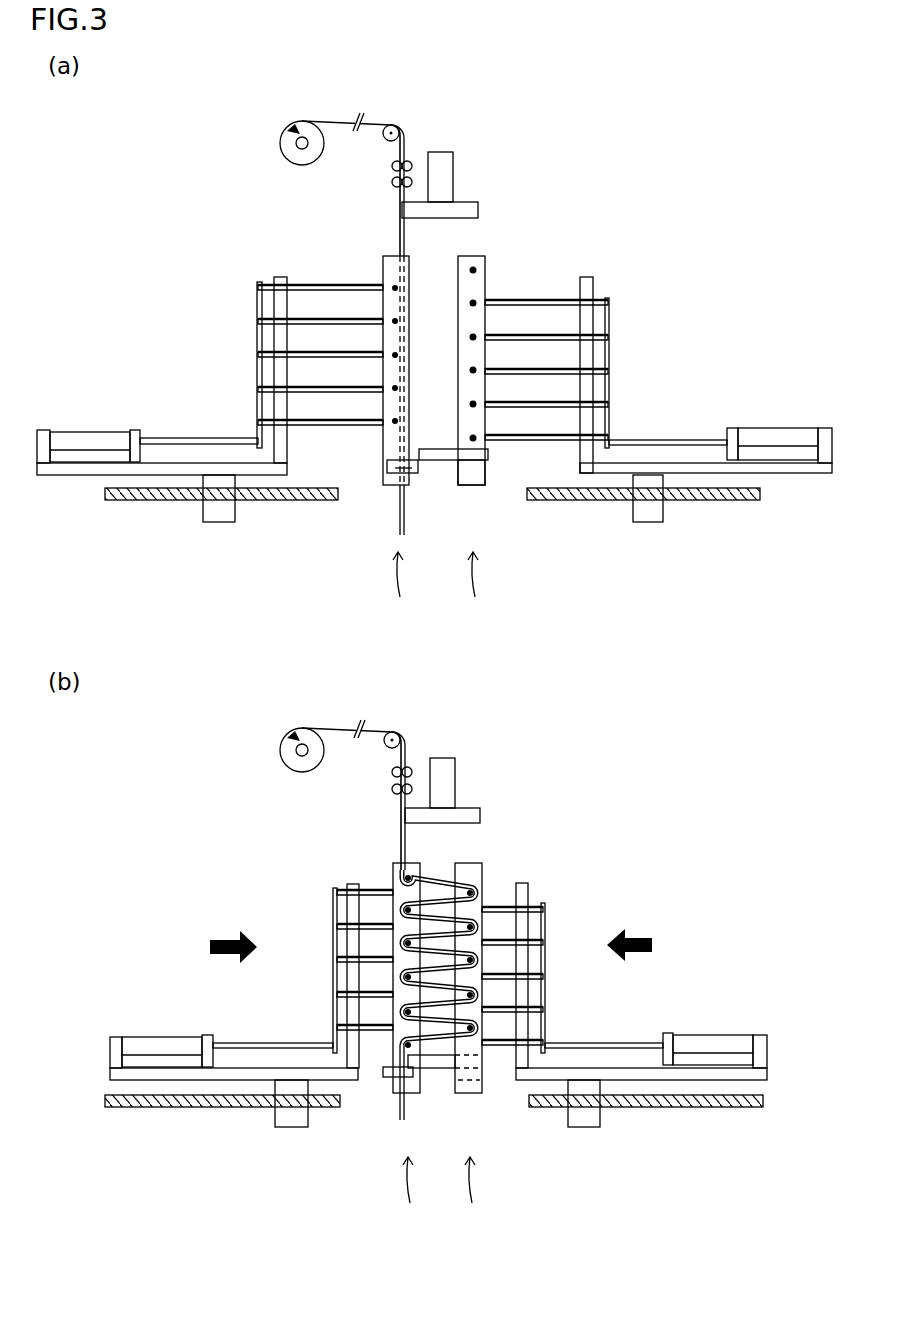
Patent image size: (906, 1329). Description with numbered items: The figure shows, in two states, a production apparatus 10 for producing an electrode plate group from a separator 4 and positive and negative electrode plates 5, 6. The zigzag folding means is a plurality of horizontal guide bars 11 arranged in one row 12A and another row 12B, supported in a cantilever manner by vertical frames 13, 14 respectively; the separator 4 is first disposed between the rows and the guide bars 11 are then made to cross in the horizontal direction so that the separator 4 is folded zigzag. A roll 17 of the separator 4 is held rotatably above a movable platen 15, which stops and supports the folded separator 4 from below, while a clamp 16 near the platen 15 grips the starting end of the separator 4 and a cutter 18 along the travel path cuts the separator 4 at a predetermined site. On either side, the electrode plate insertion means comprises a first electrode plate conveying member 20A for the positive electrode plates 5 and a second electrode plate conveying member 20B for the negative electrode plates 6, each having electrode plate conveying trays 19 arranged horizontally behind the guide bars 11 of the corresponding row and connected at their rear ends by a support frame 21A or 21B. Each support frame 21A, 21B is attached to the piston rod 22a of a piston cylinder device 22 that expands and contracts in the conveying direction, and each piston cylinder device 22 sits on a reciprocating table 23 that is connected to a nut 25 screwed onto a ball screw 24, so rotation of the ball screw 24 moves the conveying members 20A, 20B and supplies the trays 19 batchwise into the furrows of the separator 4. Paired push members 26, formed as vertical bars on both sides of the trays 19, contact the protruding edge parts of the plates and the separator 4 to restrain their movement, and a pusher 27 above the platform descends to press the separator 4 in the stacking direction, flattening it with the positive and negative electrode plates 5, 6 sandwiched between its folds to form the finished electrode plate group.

The separator 4 is at (403, 228).
The positive electrode plate 5 is at (323, 283).
The negative electrode plate 6 is at (547, 302).
The production apparatus 10 is at (605, 88).
The guide bar 11 is at (390, 283).
The one row of guide bars 12A is at (437, 894).
The other row of guide bars 12B is at (442, 894).
The vertical frame 13 is at (385, 450).
The vertical frame 14 is at (480, 475).
The platen 15 is at (437, 458).
The clamp 16 is at (413, 478).
The roll 17 is at (282, 150).
The cutter 18 is at (390, 172).
The electrode plate conveying tray 19 is at (265, 292).
The first electrode plate conveying member 20A is at (237, 269).
The second electrode plate conveying member 20B is at (629, 262).
The support frame 21A is at (260, 400).
The support frame 21B is at (608, 405).
The piston cylinder device 22 is at (92, 430).
The piston rod 22a is at (163, 430).
The reciprocating table 23 is at (80, 470).
The ball screw 24 is at (150, 500).
The nut 25 is at (230, 510).
The push member 26 is at (278, 272).
The pusher 27 is at (450, 175).